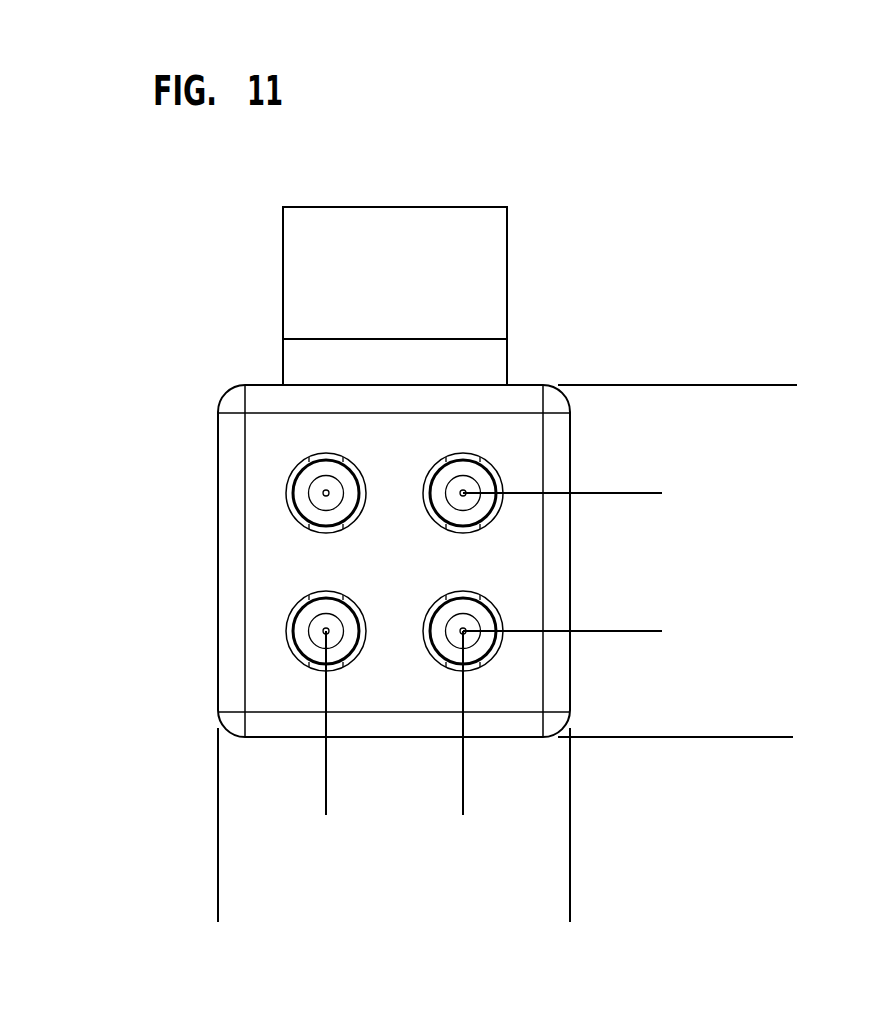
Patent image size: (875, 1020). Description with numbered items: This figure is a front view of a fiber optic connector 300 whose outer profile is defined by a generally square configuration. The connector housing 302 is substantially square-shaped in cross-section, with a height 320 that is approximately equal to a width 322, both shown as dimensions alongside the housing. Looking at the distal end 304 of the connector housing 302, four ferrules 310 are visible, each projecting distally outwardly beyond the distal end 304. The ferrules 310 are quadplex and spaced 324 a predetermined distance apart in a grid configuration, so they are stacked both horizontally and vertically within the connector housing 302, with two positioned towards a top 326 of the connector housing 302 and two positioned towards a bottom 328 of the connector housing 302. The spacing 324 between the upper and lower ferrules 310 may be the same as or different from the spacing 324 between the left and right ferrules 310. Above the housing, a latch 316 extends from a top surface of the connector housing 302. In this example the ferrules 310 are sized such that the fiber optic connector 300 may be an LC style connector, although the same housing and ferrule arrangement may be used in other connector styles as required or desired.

The fiber optic connector 300 is at (598, 307).
The connector housing 302 is at (218, 446).
The distal end 304 is at (260, 687).
The ferrule 310 is at (318, 478).
The latch 316 is at (283, 226).
The height 320 is at (758, 385).
The width 322 is at (570, 890).
The spacing 324 is at (633, 493).
The top 326 is at (463, 385).
The bottom 328 is at (518, 740).